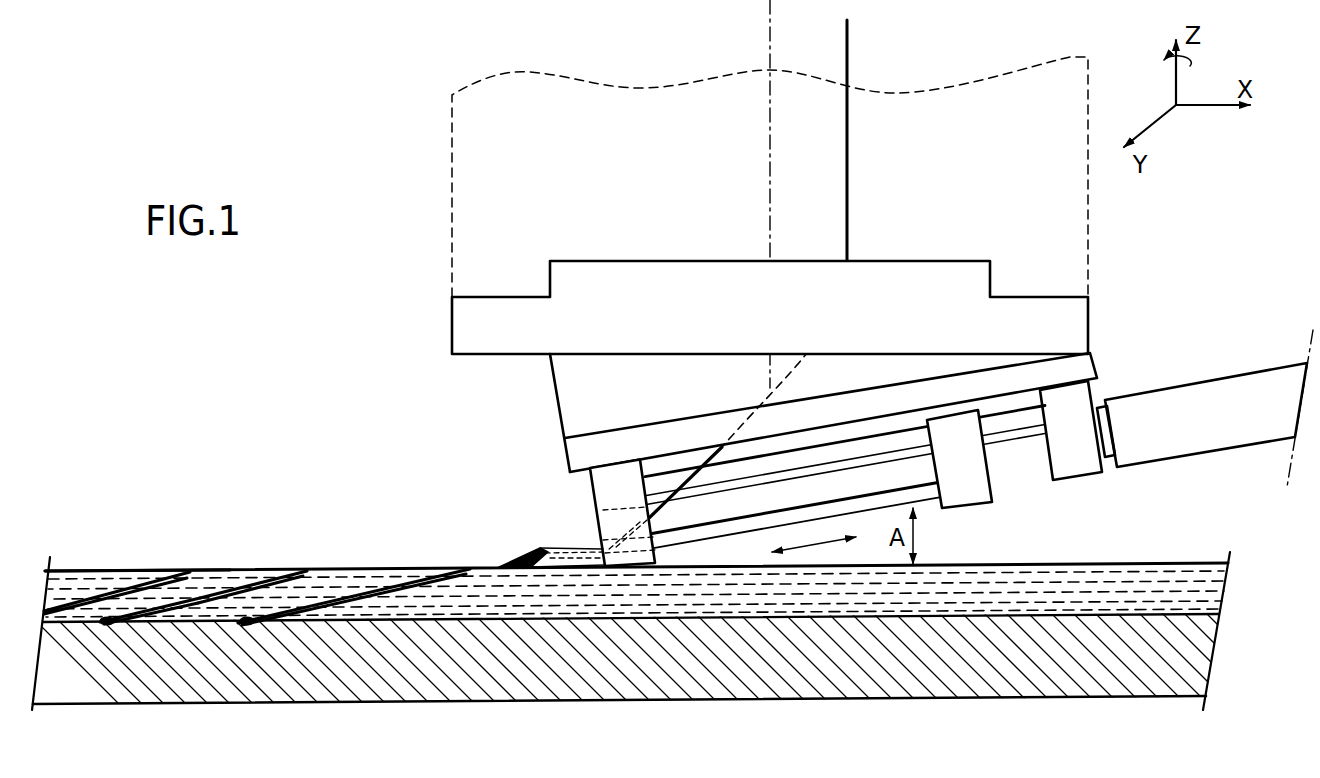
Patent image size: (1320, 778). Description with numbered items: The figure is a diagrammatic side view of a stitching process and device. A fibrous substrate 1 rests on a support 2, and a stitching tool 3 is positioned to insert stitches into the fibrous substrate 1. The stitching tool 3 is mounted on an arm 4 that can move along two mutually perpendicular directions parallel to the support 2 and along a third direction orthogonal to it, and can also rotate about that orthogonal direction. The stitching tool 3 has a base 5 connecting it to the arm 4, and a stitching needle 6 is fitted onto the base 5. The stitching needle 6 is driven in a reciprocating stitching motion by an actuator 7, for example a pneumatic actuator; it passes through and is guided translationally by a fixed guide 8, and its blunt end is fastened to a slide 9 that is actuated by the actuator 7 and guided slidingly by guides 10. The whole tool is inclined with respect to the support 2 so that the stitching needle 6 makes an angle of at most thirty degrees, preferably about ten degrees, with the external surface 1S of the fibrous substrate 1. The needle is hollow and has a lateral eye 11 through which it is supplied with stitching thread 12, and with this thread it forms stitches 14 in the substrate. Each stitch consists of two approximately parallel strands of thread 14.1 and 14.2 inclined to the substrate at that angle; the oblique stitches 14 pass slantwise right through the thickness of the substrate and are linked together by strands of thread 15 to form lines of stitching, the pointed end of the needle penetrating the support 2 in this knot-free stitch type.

The fibrous substrate 1 is at (1167, 577).
The external surface 1S is at (1050, 565).
The support 2 is at (802, 687).
The stitching tool 3 is at (1104, 350).
The arm 4 is at (487, 135).
The base 5 is at (487, 323).
The stitching needle 6 is at (878, 503).
The actuator 7 is at (1207, 388).
The fixed guide 8 is at (605, 492).
The slide 9 is at (965, 488).
The guides 10 is at (730, 472).
The lateral eye 11 is at (540, 548).
The stitching thread 12 is at (850, 63).
The stitches 14 is at (366, 615).
The strand of thread 14.1 is at (302, 588).
The strand of thread 14.2 is at (300, 592).
The strands of thread 15 is at (218, 570).